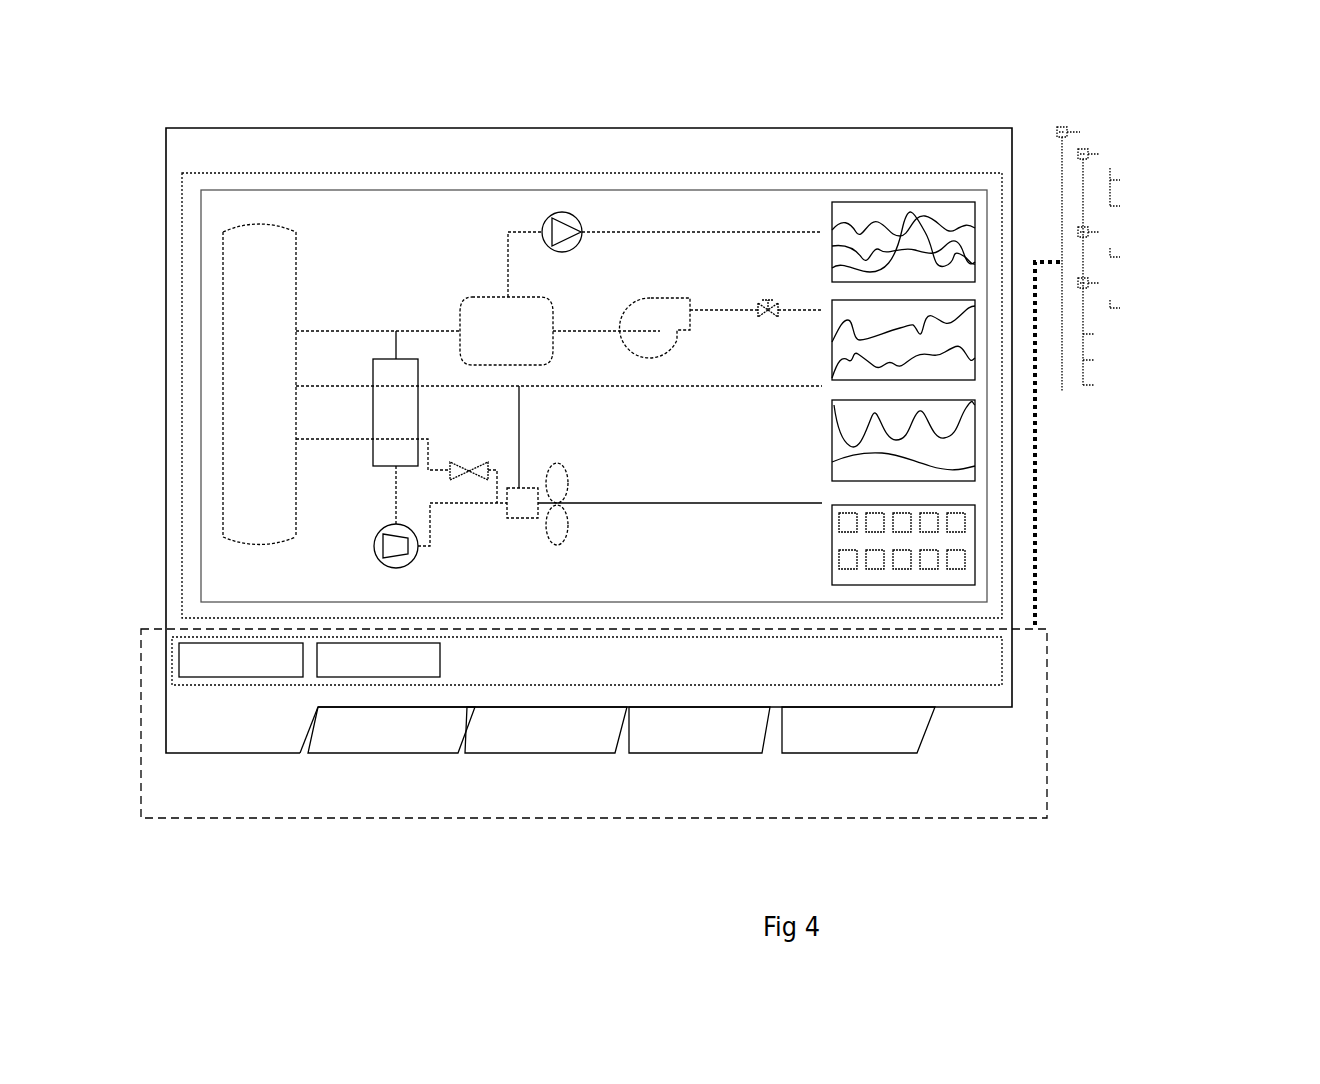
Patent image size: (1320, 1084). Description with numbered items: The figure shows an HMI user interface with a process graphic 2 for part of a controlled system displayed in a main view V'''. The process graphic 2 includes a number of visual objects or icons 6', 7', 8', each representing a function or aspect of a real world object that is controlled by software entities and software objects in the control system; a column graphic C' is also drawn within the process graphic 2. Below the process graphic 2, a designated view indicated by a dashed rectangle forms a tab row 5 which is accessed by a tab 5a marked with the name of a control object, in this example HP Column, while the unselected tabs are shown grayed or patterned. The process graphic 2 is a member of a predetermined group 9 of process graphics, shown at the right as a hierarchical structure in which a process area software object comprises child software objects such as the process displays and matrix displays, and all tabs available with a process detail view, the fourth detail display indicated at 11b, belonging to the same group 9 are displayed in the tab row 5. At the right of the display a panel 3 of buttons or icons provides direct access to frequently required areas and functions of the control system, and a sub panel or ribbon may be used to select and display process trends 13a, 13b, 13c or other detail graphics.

The main view V''' is at (589, 403).
The column graphic element C' is at (261, 307).
The visual object or icon 8' is at (498, 213).
The visual object or icon 7' is at (661, 224).
The visual object or icon 6' is at (456, 662).
The process trend 13a is at (875, 210).
The process trend 13b is at (960, 355).
The process trend 13c is at (963, 455).
The panel 3 is at (963, 558).
The process graphic 2 is at (600, 533).
The tab row 5 is at (1033, 797).
The tab 5a is at (277, 743).
The predetermined group of process graphics 9 is at (1138, 408).
The process detail view 11b is at (1265, 320).